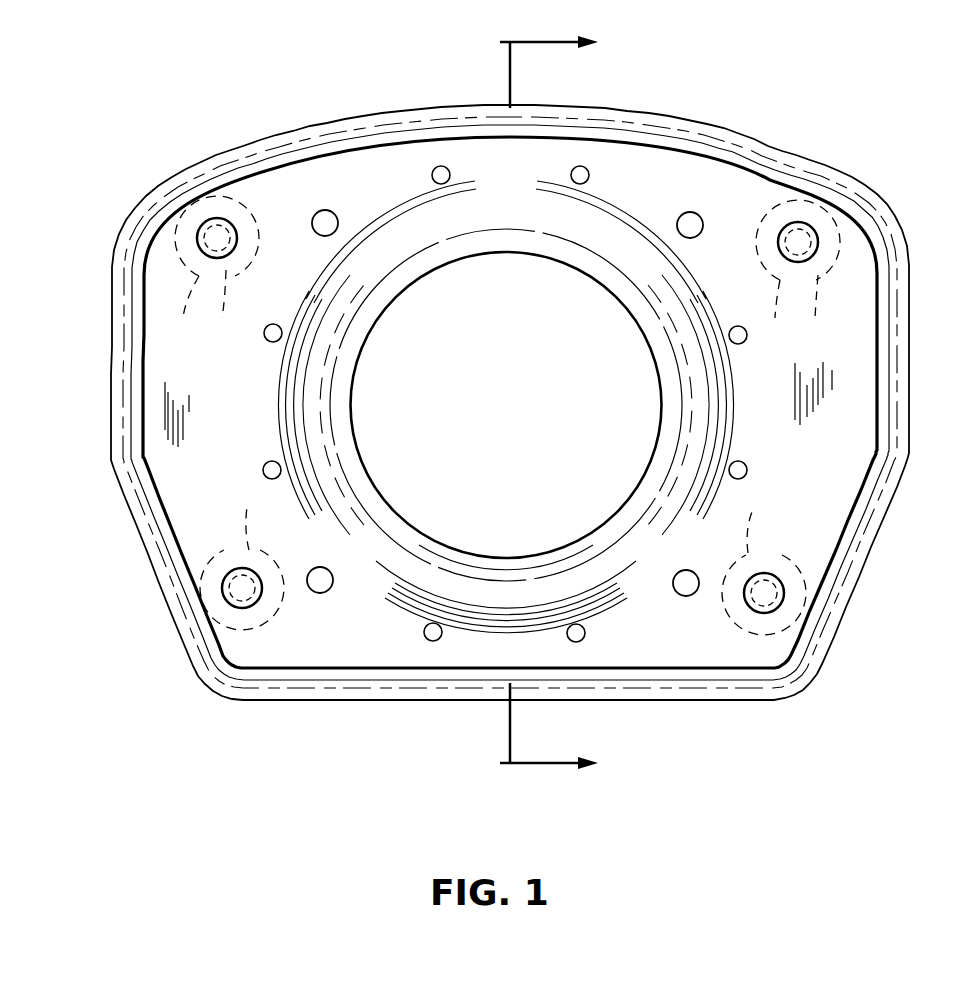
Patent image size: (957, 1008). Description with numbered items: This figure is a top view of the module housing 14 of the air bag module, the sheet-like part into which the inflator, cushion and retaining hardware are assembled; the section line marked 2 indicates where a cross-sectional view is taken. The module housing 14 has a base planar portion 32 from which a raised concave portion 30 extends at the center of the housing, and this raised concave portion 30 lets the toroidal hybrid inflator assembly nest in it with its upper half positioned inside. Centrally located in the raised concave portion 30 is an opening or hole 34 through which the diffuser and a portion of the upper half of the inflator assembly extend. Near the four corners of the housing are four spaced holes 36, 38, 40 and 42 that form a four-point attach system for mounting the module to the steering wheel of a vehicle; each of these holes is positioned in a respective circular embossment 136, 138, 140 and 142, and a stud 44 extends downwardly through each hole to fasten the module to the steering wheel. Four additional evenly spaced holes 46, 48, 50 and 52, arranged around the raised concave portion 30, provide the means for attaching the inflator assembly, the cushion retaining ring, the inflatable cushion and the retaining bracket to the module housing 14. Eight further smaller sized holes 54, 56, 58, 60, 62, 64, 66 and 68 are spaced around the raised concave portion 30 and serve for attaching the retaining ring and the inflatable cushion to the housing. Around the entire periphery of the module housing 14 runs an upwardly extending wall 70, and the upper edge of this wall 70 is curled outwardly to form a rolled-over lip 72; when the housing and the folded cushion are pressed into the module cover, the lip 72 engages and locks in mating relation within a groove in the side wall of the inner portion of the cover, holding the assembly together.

The module housing 14 is at (327, 110).
The section line 2- 2 is at (563, 403).
The raised concave portion 30 is at (405, 536).
The base planar portion 32 is at (277, 182).
The opening or hole 34 is at (451, 262).
The hole 36 is at (209, 264).
The hole 38 is at (801, 266).
The hole 40 is at (228, 560).
The hole 42 is at (775, 560).
The stud 44 is at (238, 238).
The hole 46 is at (335, 199).
The hole 48 is at (690, 212).
The hole 50 is at (320, 593).
The hole 52 is at (686, 596).
The smaller sized hole 54 is at (441, 184).
The smaller sized hole 56 is at (280, 327).
The smaller sized hole 58 is at (274, 461).
The smaller sized hole 60 is at (433, 623).
The smaller sized hole 62 is at (577, 624).
The smaller sized hole 64 is at (740, 461).
The smaller sized hole 66 is at (732, 328).
The smaller sized hole 68 is at (584, 183).
The upwardly extending wall 70 is at (145, 373).
The rolled-over lip 72 is at (150, 196).
The circular embossment 136 is at (210, 308).
The circular embossment 138 is at (792, 310).
The circular embossment 140 is at (221, 519).
The circular embossment 142 is at (776, 521).